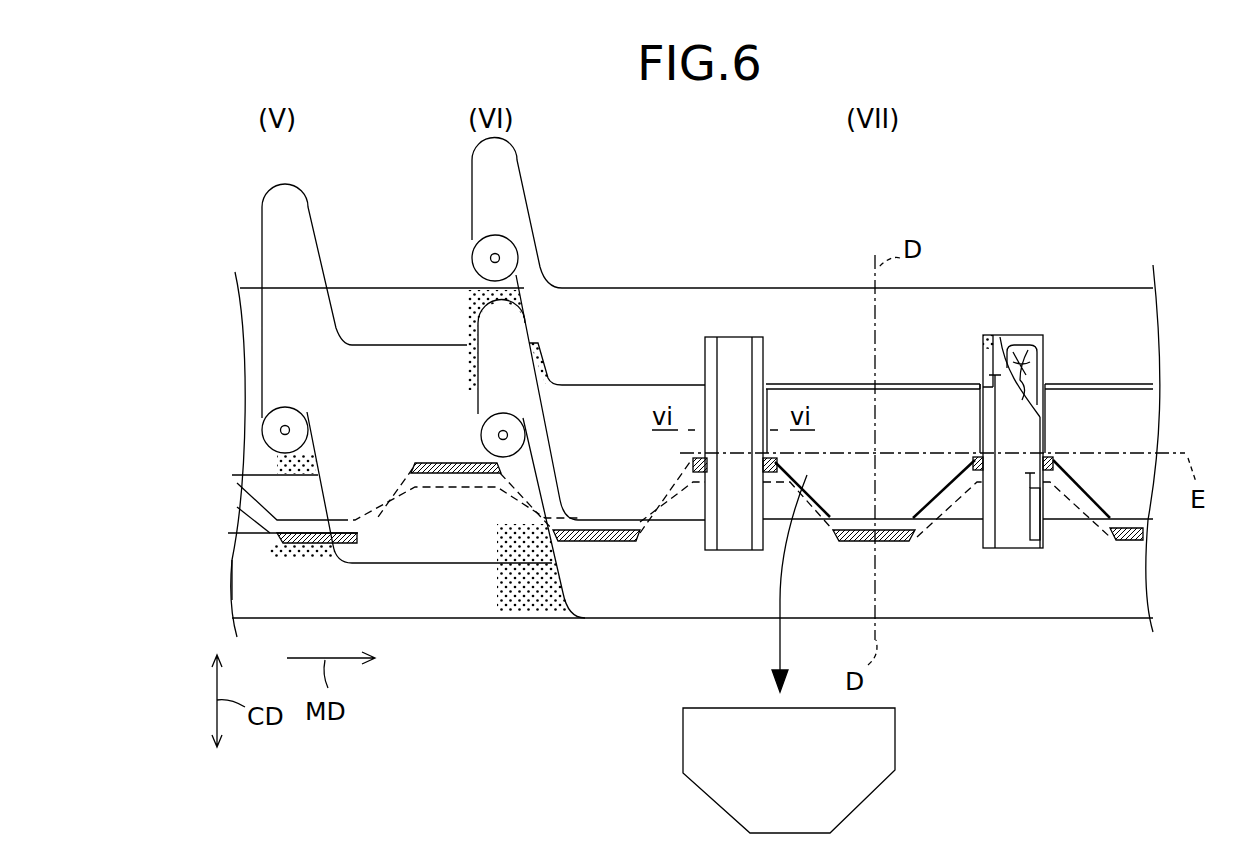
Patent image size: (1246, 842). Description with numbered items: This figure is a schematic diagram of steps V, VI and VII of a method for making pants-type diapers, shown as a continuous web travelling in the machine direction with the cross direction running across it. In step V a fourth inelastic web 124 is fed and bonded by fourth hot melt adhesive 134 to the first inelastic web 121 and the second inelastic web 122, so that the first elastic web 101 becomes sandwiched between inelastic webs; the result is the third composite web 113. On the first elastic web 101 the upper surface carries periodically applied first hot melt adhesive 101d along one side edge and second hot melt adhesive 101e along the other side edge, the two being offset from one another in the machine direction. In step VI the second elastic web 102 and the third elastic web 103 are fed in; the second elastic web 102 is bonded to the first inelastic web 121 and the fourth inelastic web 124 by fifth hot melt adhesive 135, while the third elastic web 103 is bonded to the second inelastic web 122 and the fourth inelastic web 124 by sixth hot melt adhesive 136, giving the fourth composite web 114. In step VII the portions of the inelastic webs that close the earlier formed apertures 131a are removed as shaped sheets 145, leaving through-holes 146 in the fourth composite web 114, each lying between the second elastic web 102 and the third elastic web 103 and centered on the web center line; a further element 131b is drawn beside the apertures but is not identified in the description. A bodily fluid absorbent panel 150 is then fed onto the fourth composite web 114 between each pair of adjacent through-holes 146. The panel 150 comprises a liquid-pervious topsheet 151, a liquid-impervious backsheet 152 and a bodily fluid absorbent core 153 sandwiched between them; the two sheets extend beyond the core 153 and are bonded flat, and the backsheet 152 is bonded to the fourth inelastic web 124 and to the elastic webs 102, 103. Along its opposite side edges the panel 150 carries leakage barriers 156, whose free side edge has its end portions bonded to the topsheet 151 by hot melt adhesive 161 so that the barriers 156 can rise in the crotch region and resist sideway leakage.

The first elastic web 101 is at (243, 498).
The first hot melt adhesive 101d is at (445, 460).
The second hot melt adhesive 101e is at (310, 545).
The second elastic web 102 is at (618, 305).
The third elastic web 103 is at (603, 598).
The third composite web 113 is at (433, 632).
The fourth composite web 114 is at (908, 635).
The first inelastic web 121 is at (250, 430).
The second inelastic web 122 is at (250, 583).
The fourth inelastic web 124 is at (312, 255).
The apertures 131a is at (397, 500).
The second elastic member 131b is at (598, 508).
The fourth hot melt adhesive 134 is at (270, 465).
The fifth hot melt adhesive 135 is at (473, 303).
The sixth hot melt adhesive 136 is at (523, 600).
The sheets 145 is at (705, 787).
The through-holes 146 is at (845, 407).
The bodily fluid absorbent panel 150 is at (736, 333).
The liquid-pervious topsheet 151 is at (990, 358).
The liquid-impervious backsheet 152 is at (1023, 340).
The bodily fluid absorbent core 153 is at (1035, 365).
The leakage barriers 156 is at (752, 535).
The hot melt adhesive 161 is at (988, 335).